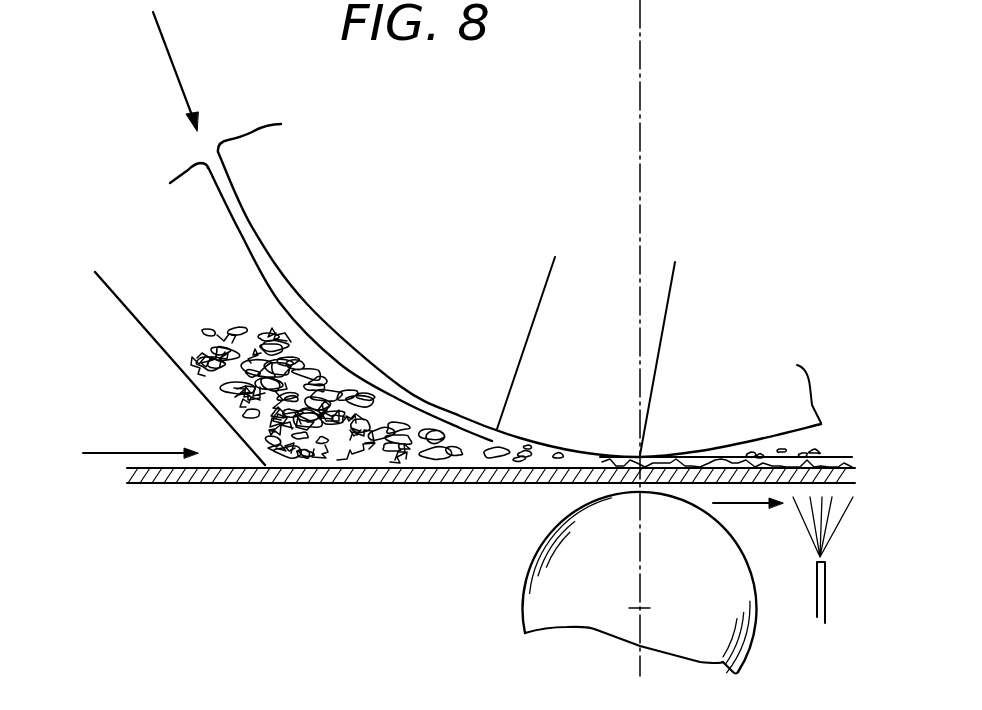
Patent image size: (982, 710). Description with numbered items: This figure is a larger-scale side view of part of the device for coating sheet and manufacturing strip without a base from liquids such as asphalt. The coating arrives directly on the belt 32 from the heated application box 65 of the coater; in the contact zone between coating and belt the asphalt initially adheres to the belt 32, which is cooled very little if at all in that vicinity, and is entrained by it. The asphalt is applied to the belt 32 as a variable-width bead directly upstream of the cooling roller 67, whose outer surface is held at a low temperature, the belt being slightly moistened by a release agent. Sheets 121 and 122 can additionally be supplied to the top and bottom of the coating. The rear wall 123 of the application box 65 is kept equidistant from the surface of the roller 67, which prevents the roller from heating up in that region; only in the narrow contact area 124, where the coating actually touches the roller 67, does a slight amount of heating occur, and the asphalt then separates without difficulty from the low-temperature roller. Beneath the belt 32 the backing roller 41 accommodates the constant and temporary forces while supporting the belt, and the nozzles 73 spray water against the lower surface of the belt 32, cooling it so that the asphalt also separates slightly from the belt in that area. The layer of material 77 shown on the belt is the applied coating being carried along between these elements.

The sheet 121 is at (177, 82).
The rear wall 123 is at (253, 227).
The roller 67 is at (341, 333).
The heated box 65 is at (171, 307).
The contact area 124 is at (612, 317).
The sheet 122 is at (103, 455).
The belt 32 is at (217, 483).
The fibrous web 77 is at (260, 483).
The backing roller 41 is at (577, 605).
The nozzles 73 is at (818, 628).